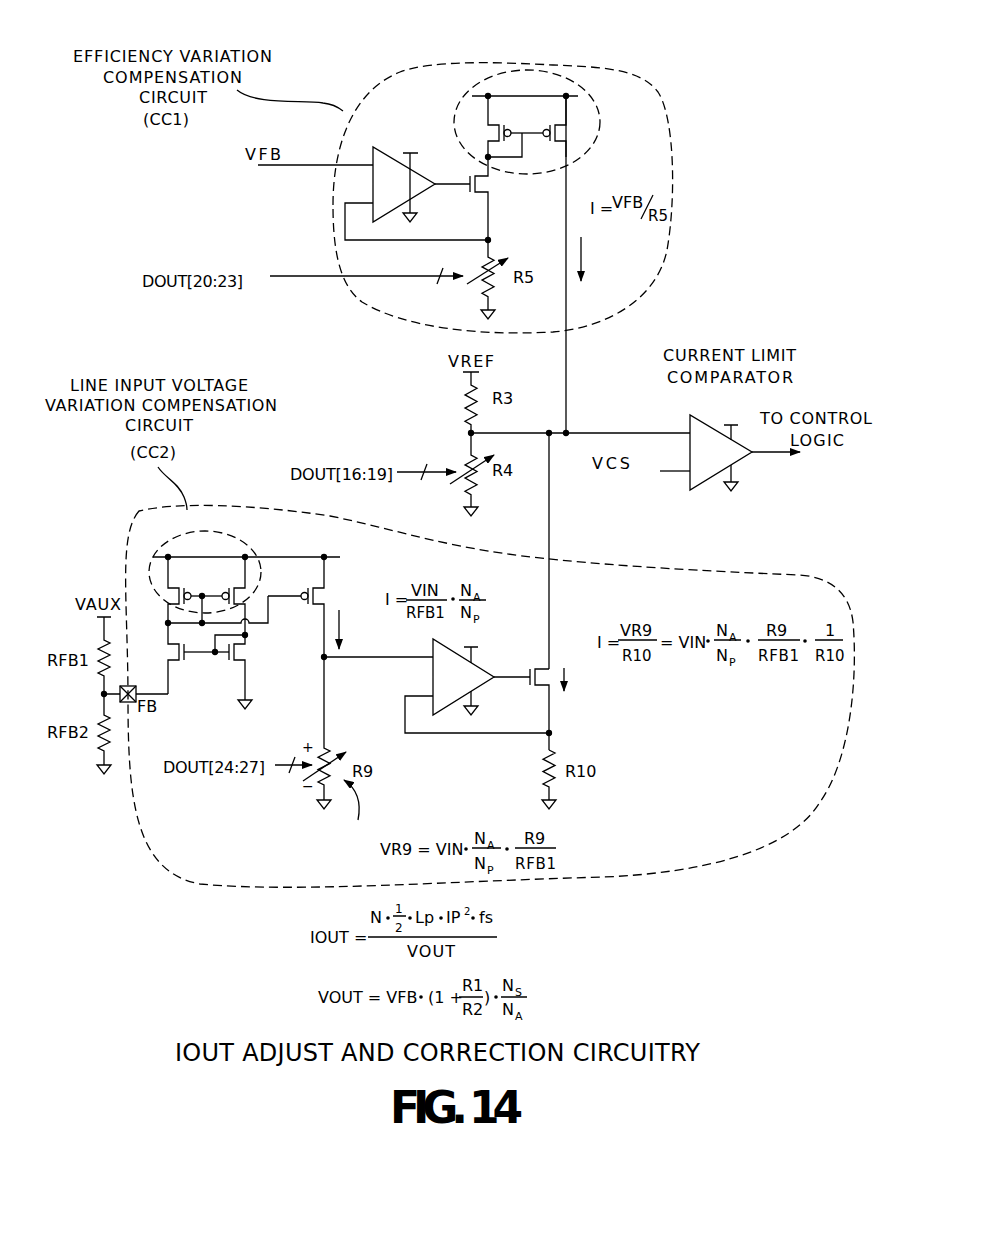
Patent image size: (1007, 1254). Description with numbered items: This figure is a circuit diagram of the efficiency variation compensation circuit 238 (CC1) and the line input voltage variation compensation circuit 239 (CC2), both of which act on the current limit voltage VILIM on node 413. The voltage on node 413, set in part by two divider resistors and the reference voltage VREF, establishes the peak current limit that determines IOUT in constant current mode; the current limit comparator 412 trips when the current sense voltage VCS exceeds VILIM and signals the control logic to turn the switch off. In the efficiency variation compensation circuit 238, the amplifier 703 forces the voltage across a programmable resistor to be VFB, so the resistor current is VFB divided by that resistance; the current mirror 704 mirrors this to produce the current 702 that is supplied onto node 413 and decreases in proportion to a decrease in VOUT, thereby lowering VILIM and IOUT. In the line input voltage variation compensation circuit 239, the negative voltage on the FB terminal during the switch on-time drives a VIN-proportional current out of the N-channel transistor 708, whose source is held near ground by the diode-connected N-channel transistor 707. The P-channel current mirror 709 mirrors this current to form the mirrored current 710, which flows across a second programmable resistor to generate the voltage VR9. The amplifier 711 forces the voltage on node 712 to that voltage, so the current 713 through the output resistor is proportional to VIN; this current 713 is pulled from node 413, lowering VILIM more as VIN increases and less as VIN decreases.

The efficiency variation compensation circuit 238 is at (565, 65).
The current mirror 704 is at (462, 97).
The amplifier 703 is at (409, 193).
The current 702 is at (583, 259).
The node 413 is at (660, 432).
The current limit comparator 412 is at (727, 459).
The line input voltage variation compensation circuit 239 is at (232, 510).
The P-channel current mirror 709 is at (247, 546).
The N-channel transistor 707 is at (248, 654).
The N-channel transistor 708 is at (176, 662).
The mirrored current 710 is at (341, 631).
The amplifier 711 is at (468, 687).
The current 713 is at (566, 674).
The node 712 is at (552, 714).